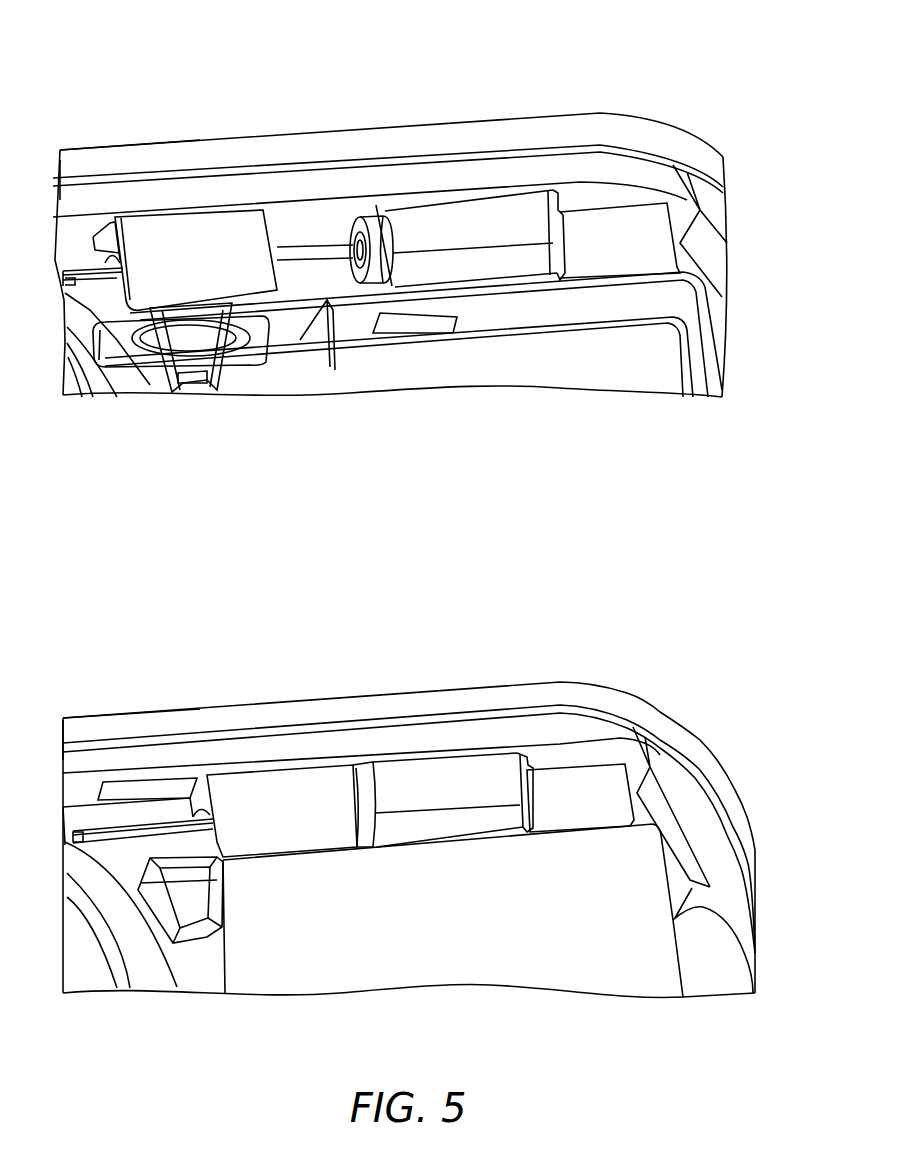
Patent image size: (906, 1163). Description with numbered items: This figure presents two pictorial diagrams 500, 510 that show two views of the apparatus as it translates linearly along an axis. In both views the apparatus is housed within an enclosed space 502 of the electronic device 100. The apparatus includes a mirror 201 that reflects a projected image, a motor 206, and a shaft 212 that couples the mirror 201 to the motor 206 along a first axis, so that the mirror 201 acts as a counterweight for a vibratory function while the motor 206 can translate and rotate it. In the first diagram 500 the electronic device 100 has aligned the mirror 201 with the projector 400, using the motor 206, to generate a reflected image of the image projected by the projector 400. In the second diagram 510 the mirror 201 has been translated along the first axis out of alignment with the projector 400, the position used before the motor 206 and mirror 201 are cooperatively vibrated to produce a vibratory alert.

The electronic device 100 is at (110, 147).
The mirror 201 is at (193, 228).
The shaft 212 is at (320, 253).
The motor 206 is at (475, 218).
The enclosed space 502 is at (617, 233).
The projector 400 is at (203, 390).
The pictorial diagram 500 is at (728, 94).
The pictorial diagram 510 is at (733, 609).